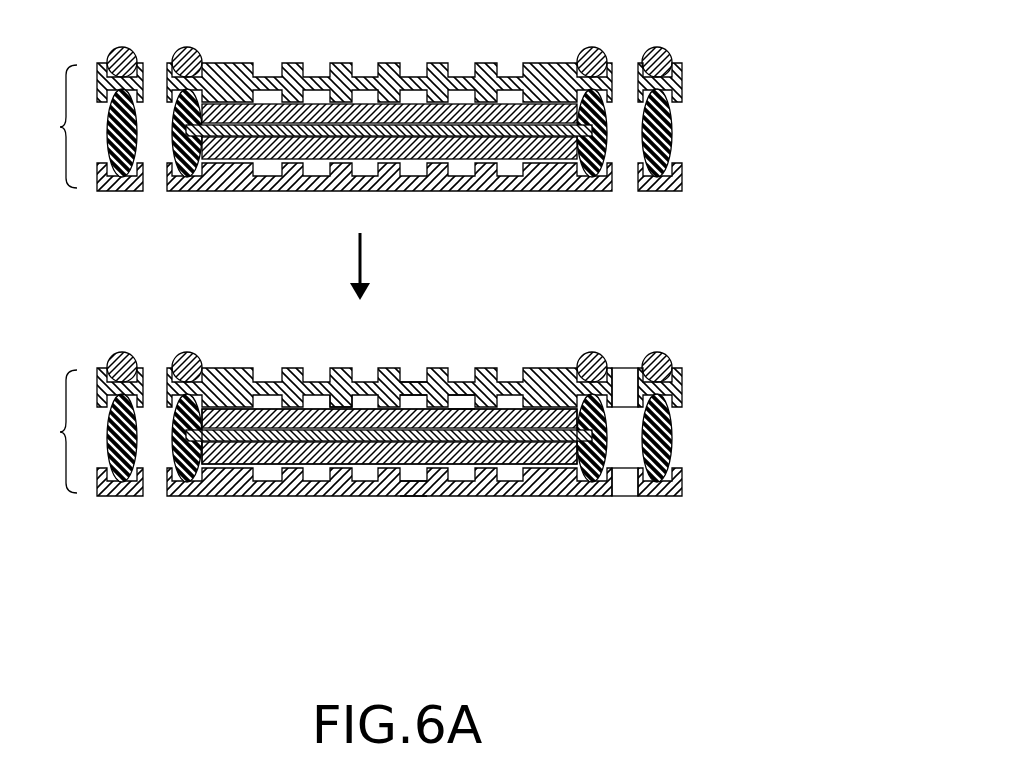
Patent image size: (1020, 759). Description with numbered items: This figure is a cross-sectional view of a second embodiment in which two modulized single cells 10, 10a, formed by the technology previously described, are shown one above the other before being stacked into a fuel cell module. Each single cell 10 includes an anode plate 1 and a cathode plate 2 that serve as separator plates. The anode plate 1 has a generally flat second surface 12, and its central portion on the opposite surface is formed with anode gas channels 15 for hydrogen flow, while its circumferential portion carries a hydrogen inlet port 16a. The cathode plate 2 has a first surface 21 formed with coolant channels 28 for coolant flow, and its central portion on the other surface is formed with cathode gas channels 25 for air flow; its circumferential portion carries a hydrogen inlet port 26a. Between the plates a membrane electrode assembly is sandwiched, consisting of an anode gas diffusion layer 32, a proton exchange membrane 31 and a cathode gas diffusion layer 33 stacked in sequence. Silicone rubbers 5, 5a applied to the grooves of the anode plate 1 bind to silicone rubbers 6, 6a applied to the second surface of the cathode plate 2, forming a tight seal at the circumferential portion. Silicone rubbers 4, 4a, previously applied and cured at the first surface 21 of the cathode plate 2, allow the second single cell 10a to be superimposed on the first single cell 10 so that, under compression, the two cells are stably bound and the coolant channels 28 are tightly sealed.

The second modulized single cell 10a is at (345, 119).
The modulized single cell 10 is at (46, 431).
The anode plate 1 is at (680, 485).
The cathode plate 2 is at (680, 382).
The silicone rubber 4 is at (658, 357).
The silicone rubber 4a is at (582, 358).
The silicone rubber 5 is at (672, 460).
The silicone rubber 5a is at (593, 488).
The silicone rubber 6 is at (673, 415).
The silicone rubber 6a is at (573, 370).
The second surface 12 is at (302, 498).
The anode gas channels 15 is at (413, 480).
The hydrogen inlet port 16a is at (623, 495).
The first surface 21 is at (548, 370).
The cathode gas channels 25 is at (458, 397).
The hydrogen inlet port 26a is at (623, 385).
The coolant channels 28 is at (408, 383).
The proton exchange membrane 31 is at (362, 443).
The anode gas diffusion layer 32 is at (553, 463).
The cathode gas diffusion layer 33 is at (317, 405).